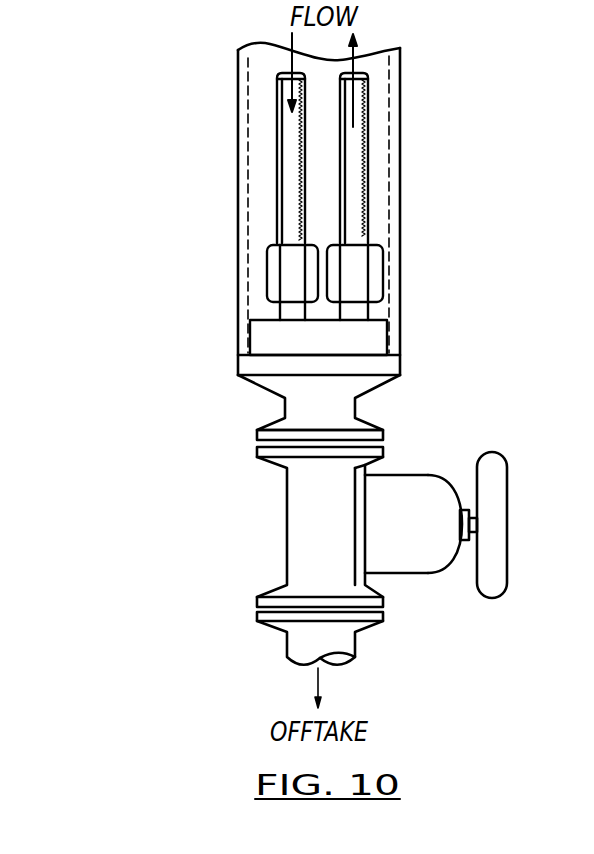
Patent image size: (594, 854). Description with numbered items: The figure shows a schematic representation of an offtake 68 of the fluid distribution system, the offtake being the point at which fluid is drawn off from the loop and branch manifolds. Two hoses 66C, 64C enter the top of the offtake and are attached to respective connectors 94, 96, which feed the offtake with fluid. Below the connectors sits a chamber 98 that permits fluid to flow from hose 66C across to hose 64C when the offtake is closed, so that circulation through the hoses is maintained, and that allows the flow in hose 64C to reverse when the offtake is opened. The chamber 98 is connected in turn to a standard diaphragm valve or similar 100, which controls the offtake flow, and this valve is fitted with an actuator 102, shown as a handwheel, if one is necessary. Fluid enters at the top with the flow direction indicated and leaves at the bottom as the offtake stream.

The offtake 68 is at (186, 342).
The hose 66C is at (300, 218).
The hose 64C is at (360, 207).
The connector 94 is at (273, 272).
The connector 96 is at (362, 272).
The chamber 98 is at (263, 358).
The diaphragm valve 100 is at (292, 521).
The actuator 102 is at (507, 478).